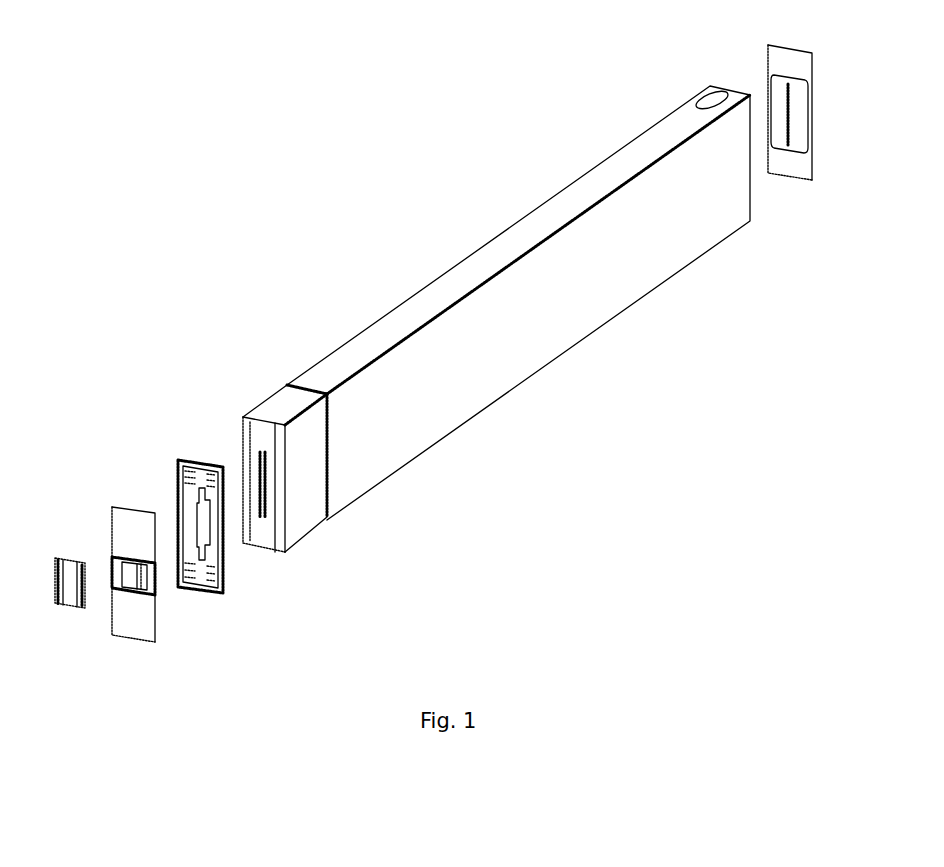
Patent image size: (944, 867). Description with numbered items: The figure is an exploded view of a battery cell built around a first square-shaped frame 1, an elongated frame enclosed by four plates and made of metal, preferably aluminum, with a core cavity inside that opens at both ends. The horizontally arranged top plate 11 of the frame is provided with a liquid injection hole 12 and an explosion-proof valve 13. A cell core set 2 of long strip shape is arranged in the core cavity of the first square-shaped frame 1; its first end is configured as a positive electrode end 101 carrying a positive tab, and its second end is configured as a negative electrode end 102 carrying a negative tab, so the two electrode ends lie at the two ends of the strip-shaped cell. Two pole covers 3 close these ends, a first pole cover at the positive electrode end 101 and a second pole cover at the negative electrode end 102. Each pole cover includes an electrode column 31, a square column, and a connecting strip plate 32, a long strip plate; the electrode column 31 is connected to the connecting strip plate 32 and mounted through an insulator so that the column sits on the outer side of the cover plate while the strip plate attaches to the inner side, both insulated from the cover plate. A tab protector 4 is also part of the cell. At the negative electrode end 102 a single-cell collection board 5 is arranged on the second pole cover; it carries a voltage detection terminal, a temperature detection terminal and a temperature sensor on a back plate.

The first square-shaped frame 1 is at (680, 253).
The cell core set 2 is at (282, 407).
The pole covers 3 is at (140, 625).
The tab protector 4 is at (202, 460).
The single-cell collection board 5 is at (72, 573).
The top plate 11 is at (580, 197).
The liquid injection hole 12 is at (308, 390).
The explosion-proof valve 13 is at (697, 102).
The electrode column 31 is at (157, 583).
The connecting strip plate 32 is at (787, 103).
The positive electrode end 101 is at (780, 240).
The negative electrode end 102 is at (305, 595).